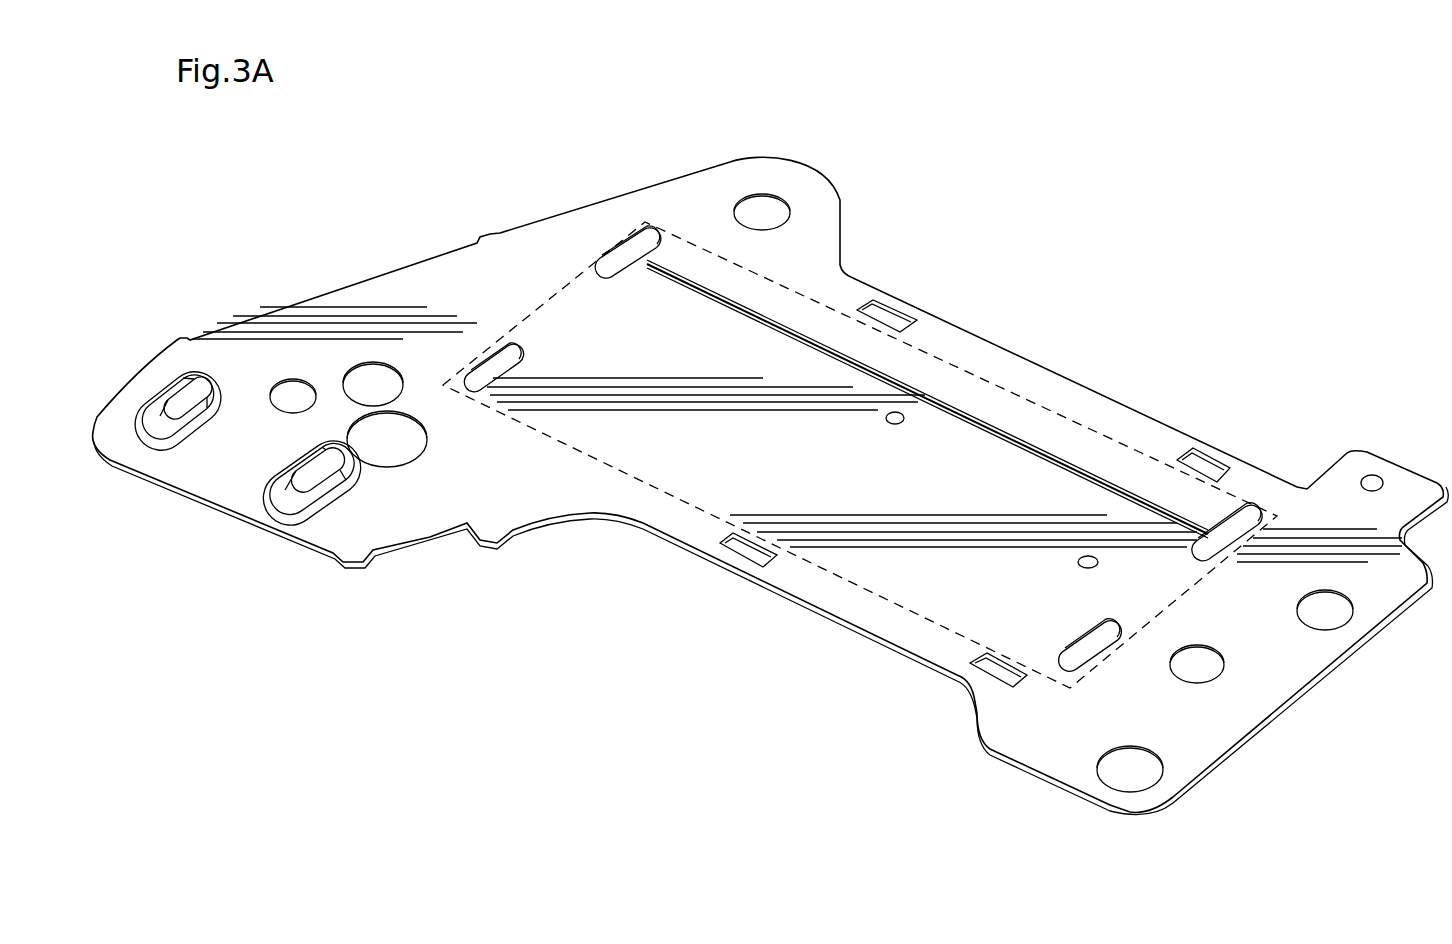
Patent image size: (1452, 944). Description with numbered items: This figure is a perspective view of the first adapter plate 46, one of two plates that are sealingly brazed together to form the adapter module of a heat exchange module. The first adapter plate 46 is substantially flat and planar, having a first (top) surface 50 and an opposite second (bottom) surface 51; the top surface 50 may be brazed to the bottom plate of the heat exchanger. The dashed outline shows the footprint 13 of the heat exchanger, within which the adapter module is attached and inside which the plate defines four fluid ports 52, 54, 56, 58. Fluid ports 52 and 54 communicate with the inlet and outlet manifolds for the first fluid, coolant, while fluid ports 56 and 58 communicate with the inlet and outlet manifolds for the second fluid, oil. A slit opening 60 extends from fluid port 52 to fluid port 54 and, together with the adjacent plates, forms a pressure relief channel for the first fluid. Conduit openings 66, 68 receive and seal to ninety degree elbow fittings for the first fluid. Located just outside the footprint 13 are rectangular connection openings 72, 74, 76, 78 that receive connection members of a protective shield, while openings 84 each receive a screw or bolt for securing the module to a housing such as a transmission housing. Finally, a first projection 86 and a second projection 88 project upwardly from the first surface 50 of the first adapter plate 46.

The first adapter plate 46 is at (1094, 236).
The footprint 13 is at (960, 367).
The first (top) surface 50 is at (1055, 393).
The second (bottom) surface 51 is at (237, 523).
The fluid port 52 is at (645, 240).
The fluid port 54 is at (1243, 513).
The fluid port 56 is at (497, 350).
The fluid port 58 is at (1083, 655).
The slit opening 60 is at (1092, 465).
The conduit opening 66 is at (762, 200).
The conduit opening 68 is at (1220, 672).
The connection opening 72 is at (893, 310).
The connection opening 74 is at (1203, 458).
The connection opening 76 is at (723, 560).
The connection opening 78 is at (997, 672).
The opening 84 is at (408, 463).
The first projection 86 is at (185, 385).
The second projection 88 is at (338, 523).